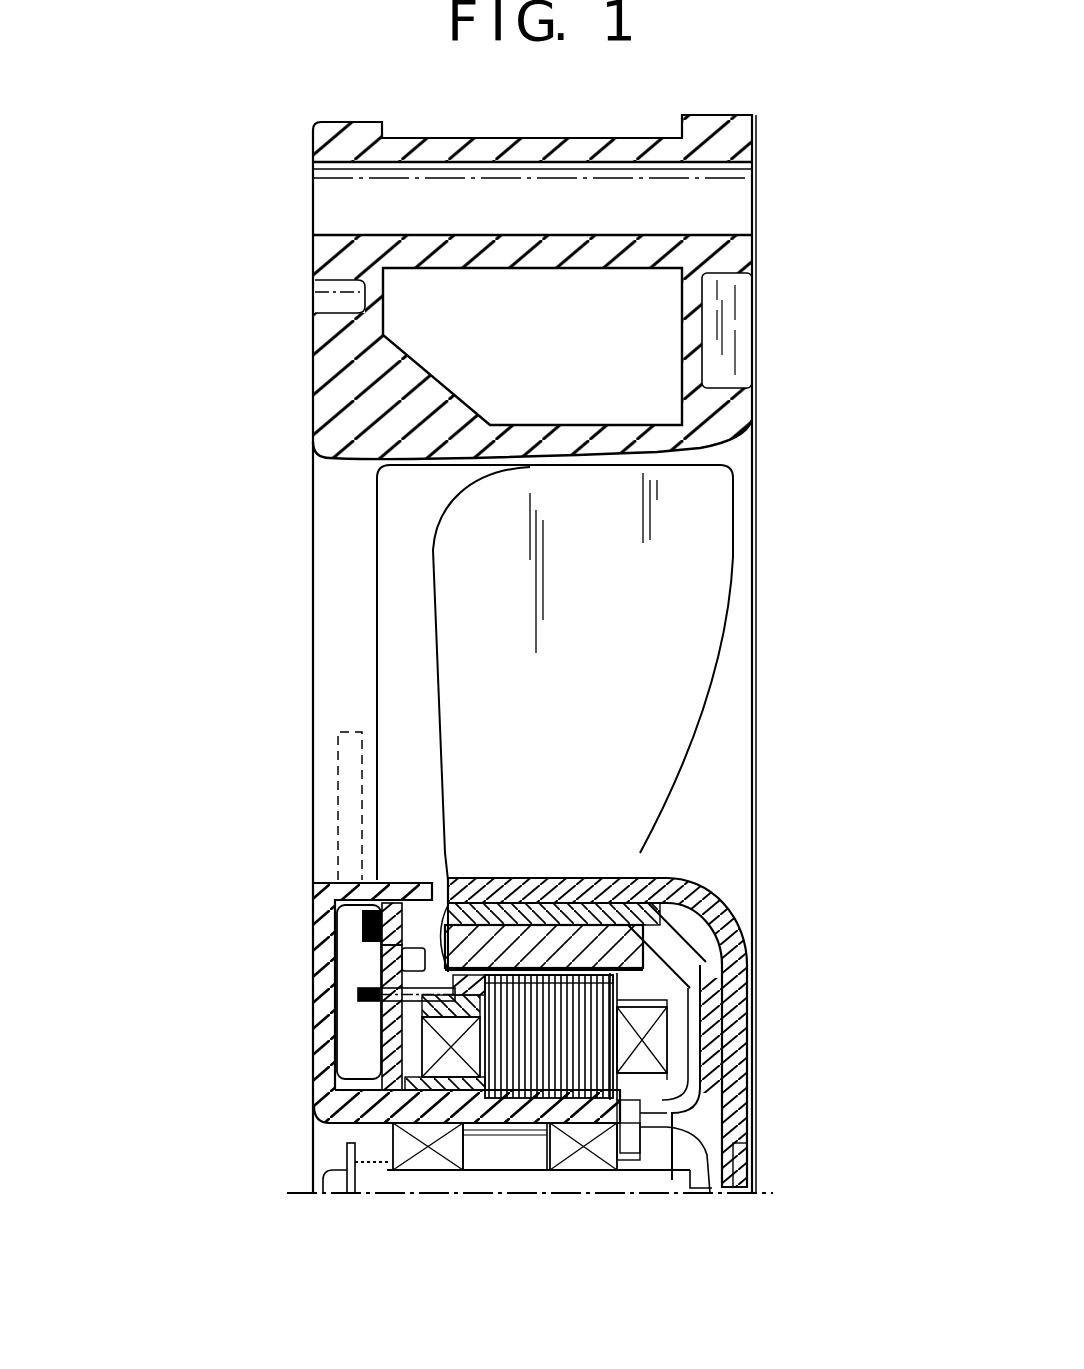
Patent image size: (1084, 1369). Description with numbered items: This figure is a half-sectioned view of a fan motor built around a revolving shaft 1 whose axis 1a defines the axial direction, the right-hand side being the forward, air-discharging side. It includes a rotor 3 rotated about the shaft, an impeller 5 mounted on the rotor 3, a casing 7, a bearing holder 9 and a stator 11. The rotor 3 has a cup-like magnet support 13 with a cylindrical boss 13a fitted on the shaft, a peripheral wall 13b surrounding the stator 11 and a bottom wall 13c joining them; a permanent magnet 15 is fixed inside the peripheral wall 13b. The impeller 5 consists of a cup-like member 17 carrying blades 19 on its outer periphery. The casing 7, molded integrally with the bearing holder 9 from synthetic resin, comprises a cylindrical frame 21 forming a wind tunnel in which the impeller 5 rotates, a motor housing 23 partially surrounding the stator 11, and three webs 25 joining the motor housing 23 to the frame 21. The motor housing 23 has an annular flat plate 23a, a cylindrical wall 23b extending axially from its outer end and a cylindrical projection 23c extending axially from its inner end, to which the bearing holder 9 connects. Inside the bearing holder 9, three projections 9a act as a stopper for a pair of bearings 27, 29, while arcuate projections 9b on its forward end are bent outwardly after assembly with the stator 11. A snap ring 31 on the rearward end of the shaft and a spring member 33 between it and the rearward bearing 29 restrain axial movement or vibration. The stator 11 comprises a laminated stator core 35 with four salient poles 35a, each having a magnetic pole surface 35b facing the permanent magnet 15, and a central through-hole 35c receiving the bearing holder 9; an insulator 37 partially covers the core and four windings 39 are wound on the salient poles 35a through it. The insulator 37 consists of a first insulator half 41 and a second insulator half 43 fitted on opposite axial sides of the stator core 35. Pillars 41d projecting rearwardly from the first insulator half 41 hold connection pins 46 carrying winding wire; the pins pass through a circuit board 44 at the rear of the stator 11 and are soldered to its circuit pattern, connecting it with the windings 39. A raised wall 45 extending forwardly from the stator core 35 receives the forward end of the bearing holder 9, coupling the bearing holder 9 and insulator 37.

The revolving shaft 1 is at (508, 1177).
The axis 1a is at (317, 1193).
The rotor 3 is at (760, 942).
The impeller 5 is at (681, 875).
The casing 7 is at (278, 387).
The bearing holder 9 is at (383, 1133).
The projections 9a is at (490, 1133).
The arcuate projections 9b is at (693, 1140).
The stator 11 is at (717, 912).
The magnet support 13 is at (757, 990).
The cylindrical boss 13a is at (643, 1162).
The peripheral wall 13b is at (515, 890).
The bottom wall 13c is at (710, 1013).
The permanent magnet 15 is at (640, 878).
The cup-like member 17 is at (760, 920).
The blades 19 is at (703, 565).
The frame 21 is at (323, 352).
The motor housing 23 is at (295, 903).
The annular flat plate 23a is at (337, 935).
The cylindrical wall 23b is at (365, 878).
The cylindrical projection 23c is at (330, 1100).
The webs 25 is at (335, 580).
The bearing 27 is at (587, 1162).
The bearing 29 is at (430, 1160).
The snap ring 31 is at (350, 1192).
The spring member 33 is at (357, 1173).
The stator core 35 is at (600, 1162).
The salient poles 35a is at (545, 958).
The magnetic pole surface 35b is at (597, 935).
The through-hole 35c is at (533, 1162).
The insulator 37 is at (655, 1042).
The windings 39 is at (753, 1080).
The first insulator half 41 is at (405, 1017).
The pillar 41d is at (450, 885).
The second insulator half 43 is at (753, 958).
The circuit board 44 is at (395, 895).
The raised wall 45 is at (673, 1077).
The connection pin 46 is at (357, 995).